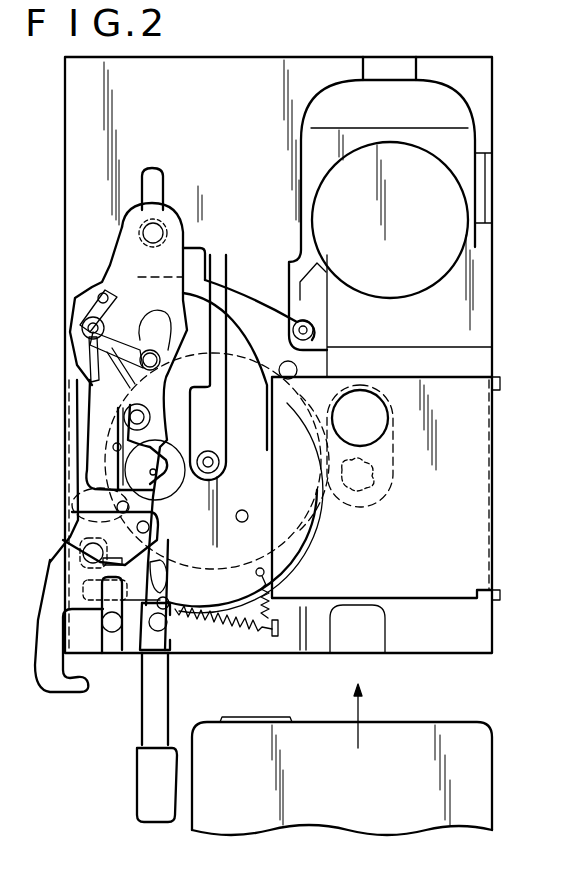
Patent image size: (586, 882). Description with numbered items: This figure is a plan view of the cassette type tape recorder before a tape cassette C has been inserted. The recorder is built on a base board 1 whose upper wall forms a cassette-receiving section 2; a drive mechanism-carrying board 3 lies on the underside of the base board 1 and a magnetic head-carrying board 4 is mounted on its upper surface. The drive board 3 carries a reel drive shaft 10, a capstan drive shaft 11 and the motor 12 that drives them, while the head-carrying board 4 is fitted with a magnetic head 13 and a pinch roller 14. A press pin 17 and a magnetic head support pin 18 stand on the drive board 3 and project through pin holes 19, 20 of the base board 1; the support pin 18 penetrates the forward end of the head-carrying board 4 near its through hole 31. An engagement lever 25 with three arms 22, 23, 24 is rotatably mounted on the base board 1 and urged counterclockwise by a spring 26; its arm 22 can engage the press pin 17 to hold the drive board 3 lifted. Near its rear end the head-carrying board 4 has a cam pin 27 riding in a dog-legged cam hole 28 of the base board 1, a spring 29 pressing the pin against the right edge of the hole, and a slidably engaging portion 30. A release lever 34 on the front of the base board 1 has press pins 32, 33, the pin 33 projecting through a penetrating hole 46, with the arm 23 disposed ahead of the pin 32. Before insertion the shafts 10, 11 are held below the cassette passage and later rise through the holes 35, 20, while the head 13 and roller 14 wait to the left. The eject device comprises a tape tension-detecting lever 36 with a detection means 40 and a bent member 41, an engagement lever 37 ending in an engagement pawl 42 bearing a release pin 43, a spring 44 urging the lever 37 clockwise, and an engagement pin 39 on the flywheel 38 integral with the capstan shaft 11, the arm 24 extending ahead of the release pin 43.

The base board 1 is at (65, 173).
The cassette-receiving section 2 is at (432, 600).
The drive mechanism-carrying board 3 is at (405, 127).
The magnetic head-carrying board 4 is at (72, 298).
The reel drive shaft 10 is at (365, 490).
The capstan drive shaft 11 is at (218, 458).
The motor 12 is at (432, 280).
The magnetic head 13 is at (163, 568).
The pinch roller 14 is at (170, 490).
The press pin 17 is at (293, 320).
The magnetic head support pin 18 is at (162, 223).
The pin hole 19 is at (340, 103).
The pin hole 20 is at (160, 172).
The arm 22 is at (326, 272).
The arm 23 is at (206, 597).
The arm 24 is at (206, 283).
The engagement lever 25 is at (268, 392).
The spring 26 is at (284, 612).
The cam pin 27 is at (80, 553).
The cam hole 28 is at (70, 507).
The spring 29 is at (246, 636).
The slidably engaging portion 30 is at (72, 680).
The through hole 31 is at (155, 318).
The press pin 32 is at (166, 624).
The press pin 33 is at (112, 633).
The release lever 34 is at (137, 770).
The hole 35 is at (390, 462).
The tape tension-detecting lever 36 is at (60, 436).
The engagement lever 37 is at (84, 332).
The flywheel 38 is at (300, 520).
The engagement pin 39 is at (240, 510).
The detection means 40 is at (165, 652).
The bent member 41 is at (66, 393).
The engagement pawl 42 is at (195, 401).
The release pin 43 is at (126, 345).
The spring 44 is at (112, 284).
The penetrating hole 46 is at (120, 645).
The tape cassette C is at (495, 773).